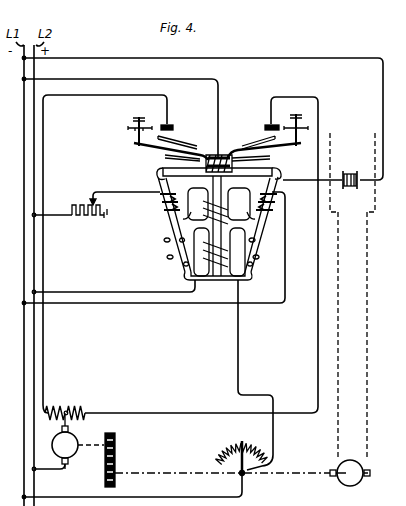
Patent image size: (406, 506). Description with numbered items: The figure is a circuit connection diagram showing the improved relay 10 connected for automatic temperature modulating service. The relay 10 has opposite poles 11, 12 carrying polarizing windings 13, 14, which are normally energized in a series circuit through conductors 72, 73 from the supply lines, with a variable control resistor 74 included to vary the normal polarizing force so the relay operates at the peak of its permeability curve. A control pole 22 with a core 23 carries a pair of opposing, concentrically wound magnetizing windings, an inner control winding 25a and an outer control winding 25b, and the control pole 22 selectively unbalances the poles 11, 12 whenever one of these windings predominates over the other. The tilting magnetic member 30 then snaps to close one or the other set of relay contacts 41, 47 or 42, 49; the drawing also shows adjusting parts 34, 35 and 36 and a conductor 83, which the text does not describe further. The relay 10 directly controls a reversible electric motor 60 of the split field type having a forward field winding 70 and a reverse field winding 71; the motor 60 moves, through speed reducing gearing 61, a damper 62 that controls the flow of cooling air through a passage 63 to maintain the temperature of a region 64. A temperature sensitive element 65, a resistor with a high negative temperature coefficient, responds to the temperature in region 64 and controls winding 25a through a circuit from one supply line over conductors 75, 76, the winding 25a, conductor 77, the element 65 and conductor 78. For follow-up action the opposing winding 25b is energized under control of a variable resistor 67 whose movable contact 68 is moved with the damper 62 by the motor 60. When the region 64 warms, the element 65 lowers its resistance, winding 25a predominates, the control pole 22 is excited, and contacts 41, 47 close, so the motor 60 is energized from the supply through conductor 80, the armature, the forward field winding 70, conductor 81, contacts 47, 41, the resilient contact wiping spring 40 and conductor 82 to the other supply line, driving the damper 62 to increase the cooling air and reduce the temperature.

The relay 10 is at (300, 222).
The pole 11 is at (158, 177).
The pole 12 is at (281, 176).
The polarizing winding 13 is at (163, 213).
The polarizing winding 14 is at (272, 210).
The control pole 22 is at (218, 137).
The core 23 is at (212, 278).
The inner control winding 25a is at (207, 210).
The outer control winding 25b is at (228, 246).
The tilting magnetic member 30 is at (272, 153).
The left arm 34 is at (145, 146).
The adjusting screw 35 is at (136, 130).
The adjusting screw 36 is at (300, 128).
The resilient contact wiping spring 40 is at (218, 150).
The relay contact 41 is at (168, 137).
The relay contact 42 is at (268, 130).
The relay contact 47 is at (172, 124).
The relay contact 49 is at (268, 124).
The reversible electric motor 60 is at (77, 439).
The speed reducing gearing 61 is at (116, 458).
The damper 62 is at (349, 459).
The passage 63 is at (364, 326).
The region 64 is at (352, 137).
The temperature sensitive element 65 is at (353, 188).
The variable resistor 67 is at (222, 450).
The movable contact 68 is at (248, 460).
The forward field winding 70 is at (48, 407).
The reverse field winding 71 is at (76, 407).
The conductor 72 is at (146, 304).
The conductor 73 is at (190, 193).
The variable control resistor 74 is at (94, 219).
The conductor 75 is at (108, 289).
The conductor 76 is at (200, 228).
The conductor 77 is at (308, 178).
The conductor 78 is at (357, 60).
The conductor 80 is at (59, 471).
The conductor 81 is at (43, 272).
The conductor 82 is at (218, 105).
The conductor 83 is at (316, 334).